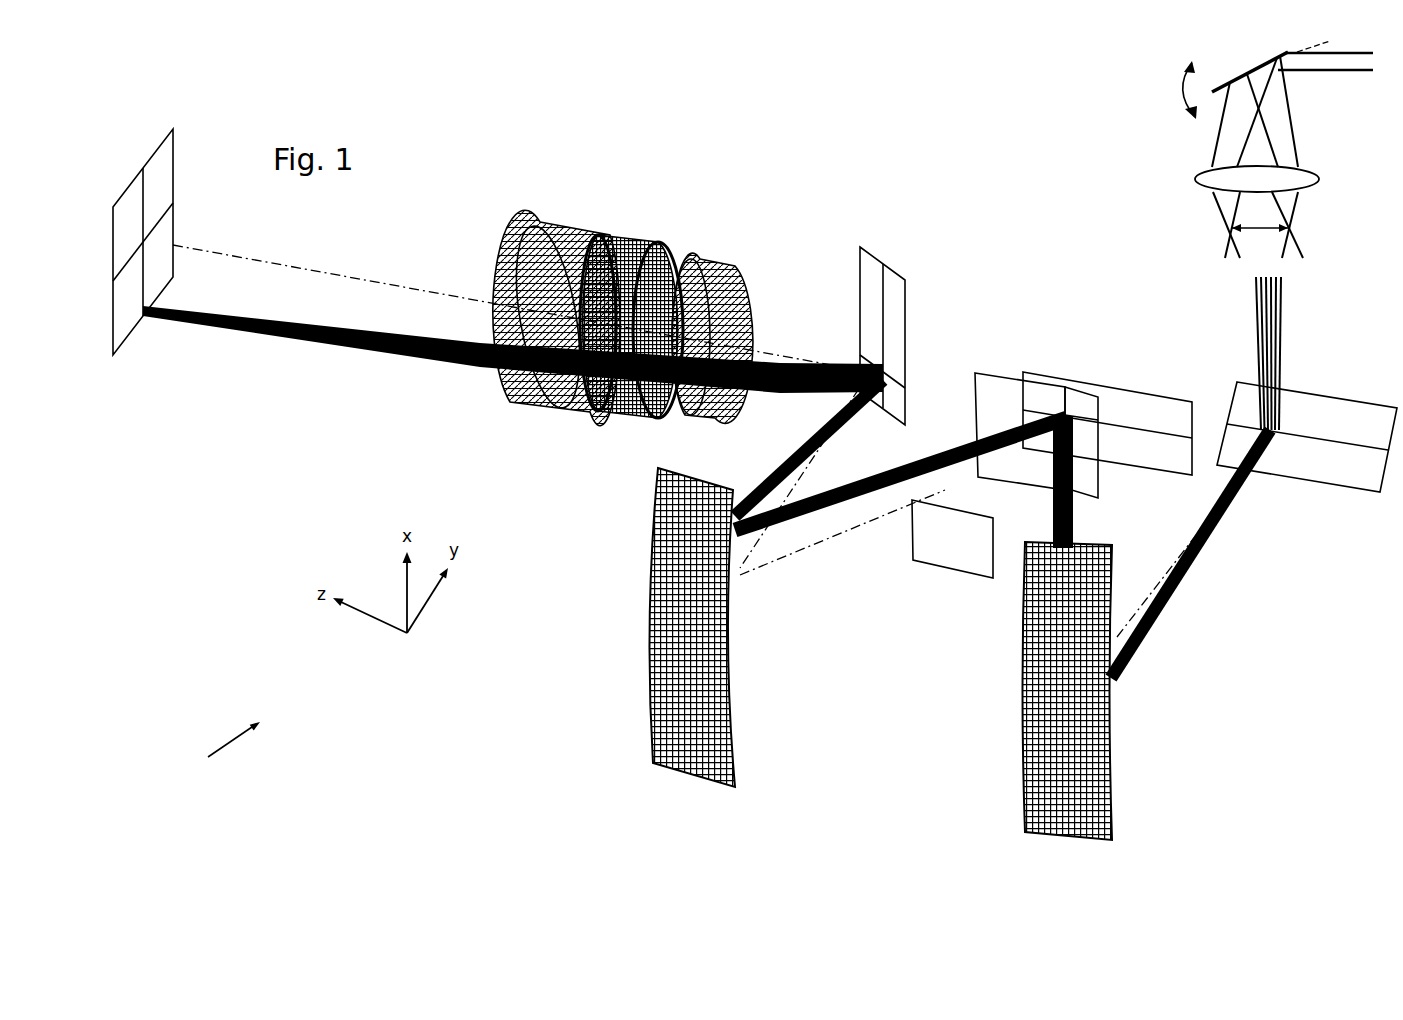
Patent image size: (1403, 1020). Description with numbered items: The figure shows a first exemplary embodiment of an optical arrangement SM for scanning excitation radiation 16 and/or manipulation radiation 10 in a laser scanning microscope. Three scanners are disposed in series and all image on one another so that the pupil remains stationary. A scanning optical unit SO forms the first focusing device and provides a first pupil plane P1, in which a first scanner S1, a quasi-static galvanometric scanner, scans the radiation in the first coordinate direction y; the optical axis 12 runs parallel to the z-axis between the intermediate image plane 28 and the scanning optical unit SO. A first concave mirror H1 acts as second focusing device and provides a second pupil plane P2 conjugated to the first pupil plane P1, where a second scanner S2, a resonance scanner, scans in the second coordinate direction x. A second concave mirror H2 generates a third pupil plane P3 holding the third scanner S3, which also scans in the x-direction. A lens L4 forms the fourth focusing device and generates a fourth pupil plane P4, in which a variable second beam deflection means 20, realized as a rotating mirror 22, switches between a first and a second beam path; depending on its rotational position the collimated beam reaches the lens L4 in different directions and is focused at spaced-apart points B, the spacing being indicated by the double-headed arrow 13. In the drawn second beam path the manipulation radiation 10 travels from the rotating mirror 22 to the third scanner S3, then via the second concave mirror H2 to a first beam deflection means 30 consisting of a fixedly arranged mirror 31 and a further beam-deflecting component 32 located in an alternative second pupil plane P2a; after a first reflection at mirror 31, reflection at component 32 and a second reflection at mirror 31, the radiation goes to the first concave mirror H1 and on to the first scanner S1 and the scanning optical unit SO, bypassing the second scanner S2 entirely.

The manipulation radiation 10 is at (770, 365).
The optical axis 12 is at (313, 273).
The double-headed arrow 13 is at (1233, 240).
The excitation radiation 16 is at (282, 337).
The variable second beam deflection means 20 is at (1183, 73).
The rotating mirror 22 is at (1212, 82).
The light source field 28 is at (130, 307).
The first beam deflection means 30 is at (1050, 505).
The fixedly arranged mirror 31 is at (1102, 477).
The further beam-deflecting component 32 is at (946, 568).
The scanning optical unit SO is at (603, 228).
The first scanner S1 is at (872, 309).
The first pupil plane P1 is at (880, 263).
The second scanner S2 is at (1110, 398).
The second pupil plane P2 is at (1172, 397).
The alternative second pupil plane P2a is at (940, 560).
The third scanner S3 is at (1307, 461).
The third pupil plane P3 is at (1327, 467).
The fourth pupil plane P4 is at (1183, 73).
The first concave mirror H1 is at (730, 720).
The second concave mirror H2 is at (1113, 763).
The lens L4 is at (1220, 177).
The points B is at (1302, 228).
The optical arrangement SM is at (215, 755).